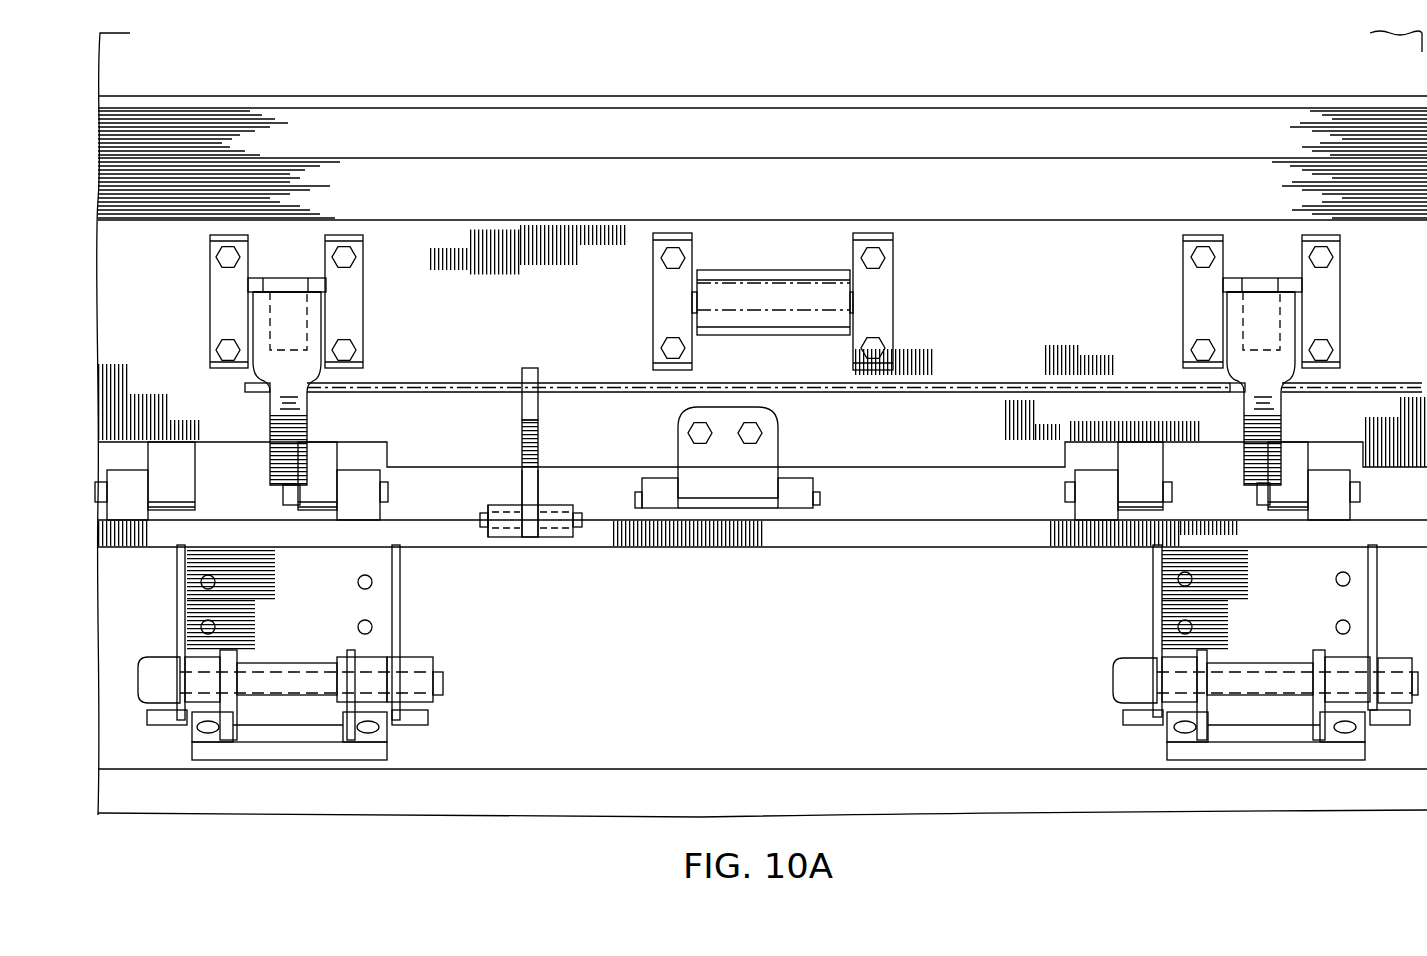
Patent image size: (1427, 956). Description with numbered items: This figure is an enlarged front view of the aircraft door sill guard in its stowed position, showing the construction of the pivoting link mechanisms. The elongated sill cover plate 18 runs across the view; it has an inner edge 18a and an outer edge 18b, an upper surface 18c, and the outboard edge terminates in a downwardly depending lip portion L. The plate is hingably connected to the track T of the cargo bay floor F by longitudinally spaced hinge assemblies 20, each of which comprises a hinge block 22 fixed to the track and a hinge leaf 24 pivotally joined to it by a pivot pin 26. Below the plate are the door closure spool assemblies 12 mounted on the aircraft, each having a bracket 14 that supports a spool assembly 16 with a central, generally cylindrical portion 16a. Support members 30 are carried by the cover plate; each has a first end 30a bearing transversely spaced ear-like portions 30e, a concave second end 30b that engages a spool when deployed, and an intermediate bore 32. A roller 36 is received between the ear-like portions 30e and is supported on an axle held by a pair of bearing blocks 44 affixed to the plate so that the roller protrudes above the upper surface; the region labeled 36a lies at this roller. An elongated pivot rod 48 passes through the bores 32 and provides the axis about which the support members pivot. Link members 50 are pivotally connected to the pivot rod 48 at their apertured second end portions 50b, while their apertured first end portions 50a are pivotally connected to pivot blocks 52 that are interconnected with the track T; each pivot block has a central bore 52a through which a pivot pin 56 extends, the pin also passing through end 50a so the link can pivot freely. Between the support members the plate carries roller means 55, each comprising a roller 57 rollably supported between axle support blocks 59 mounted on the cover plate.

The lip portion L is at (208, 93).
The sill cover plate 18 is at (846, 94).
The inner edge 18a is at (990, 468).
The outer edge 18b is at (503, 97).
The upper surface 18c is at (772, 300).
The floor F is at (1043, 537).
The track T is at (735, 537).
The door closure spool assembly 12 is at (426, 646).
The bracket 14 is at (175, 603).
The spool assembly 16 is at (446, 683).
The central cylindrical portion 16a is at (282, 663).
The hinge assembly 20 is at (783, 431).
The hinge block 22 is at (795, 482).
The hinge leaf 24 is at (690, 450).
The pivot pin 26 is at (821, 498).
The support member 30 is at (313, 413).
The first end 30a is at (262, 291).
The second end 30b is at (281, 488).
The ear-like portions 30e is at (260, 325).
The bore 32 is at (273, 394).
The roller 36 is at (288, 290).
The cover plate edge 36a is at (1228, 297).
The bearing blocks 44 is at (211, 290).
The pivot rod 48 is at (410, 382).
The link member 50 is at (520, 410).
The first end portion 50a is at (530, 522).
The second end portion 50b is at (530, 367).
The pivot block 52 is at (552, 540).
The central bore 52a is at (497, 537).
The roller means 55 is at (647, 300).
The pivot pin 56 is at (486, 515).
The roller 57 is at (768, 287).
The axle support blocks 59 is at (663, 283).